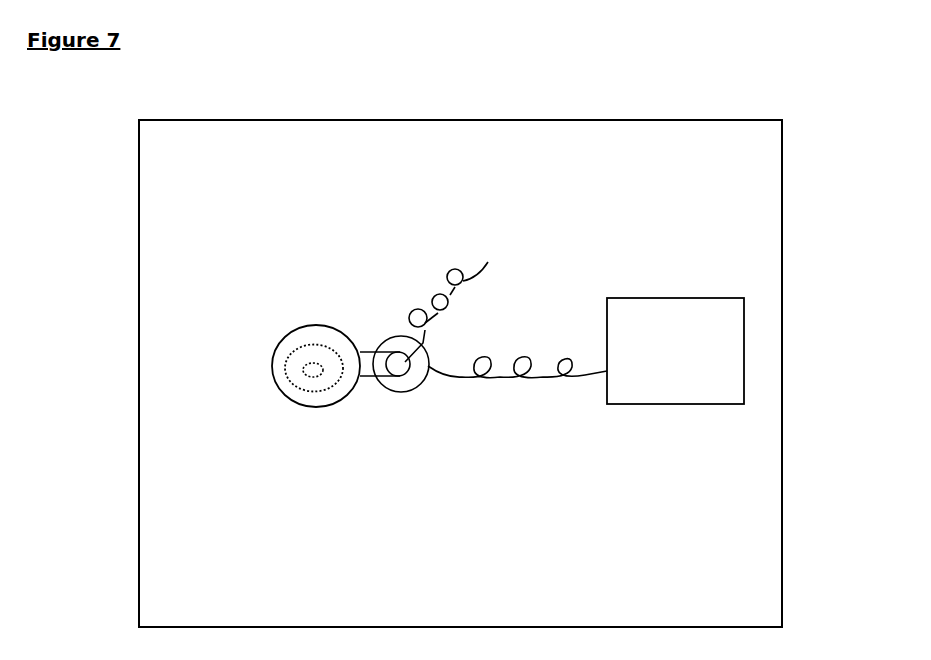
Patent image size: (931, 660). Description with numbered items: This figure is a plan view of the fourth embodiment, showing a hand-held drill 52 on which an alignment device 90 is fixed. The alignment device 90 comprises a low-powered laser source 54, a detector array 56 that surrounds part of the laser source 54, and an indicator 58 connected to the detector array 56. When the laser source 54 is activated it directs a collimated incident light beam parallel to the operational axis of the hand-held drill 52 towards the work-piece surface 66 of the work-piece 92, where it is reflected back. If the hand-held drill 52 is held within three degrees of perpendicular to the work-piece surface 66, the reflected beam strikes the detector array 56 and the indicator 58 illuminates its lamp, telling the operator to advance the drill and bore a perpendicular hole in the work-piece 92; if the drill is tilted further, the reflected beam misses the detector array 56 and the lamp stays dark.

The hand-held drill 52 is at (290, 333).
The low-powered laser source 54 is at (398, 364).
The detector array 56 is at (403, 380).
The indicator 58 is at (682, 298).
The work-piece surface 66 is at (673, 196).
The alignment device 90 is at (376, 320).
The work-piece 92 is at (642, 120).